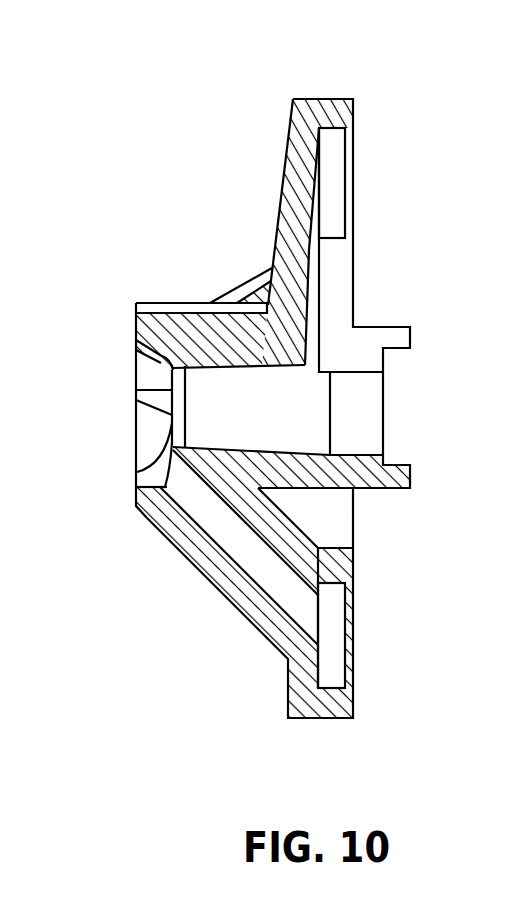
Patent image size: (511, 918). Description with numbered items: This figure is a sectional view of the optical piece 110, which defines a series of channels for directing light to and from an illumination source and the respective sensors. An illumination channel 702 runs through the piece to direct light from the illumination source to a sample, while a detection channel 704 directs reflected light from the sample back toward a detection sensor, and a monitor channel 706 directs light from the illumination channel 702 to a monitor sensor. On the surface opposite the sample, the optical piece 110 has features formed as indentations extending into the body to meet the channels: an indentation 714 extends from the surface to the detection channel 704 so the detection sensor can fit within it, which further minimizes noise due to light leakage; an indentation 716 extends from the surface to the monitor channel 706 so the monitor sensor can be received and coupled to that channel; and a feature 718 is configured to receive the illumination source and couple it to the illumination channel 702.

The optical piece 110 is at (182, 64).
The illumination channel 702 is at (197, 400).
The detection channel 704 is at (293, 587).
The monitor channel 706 is at (310, 257).
The indentation 714 is at (353, 628).
The indentation 716 is at (353, 190).
The feature 718 is at (383, 408).